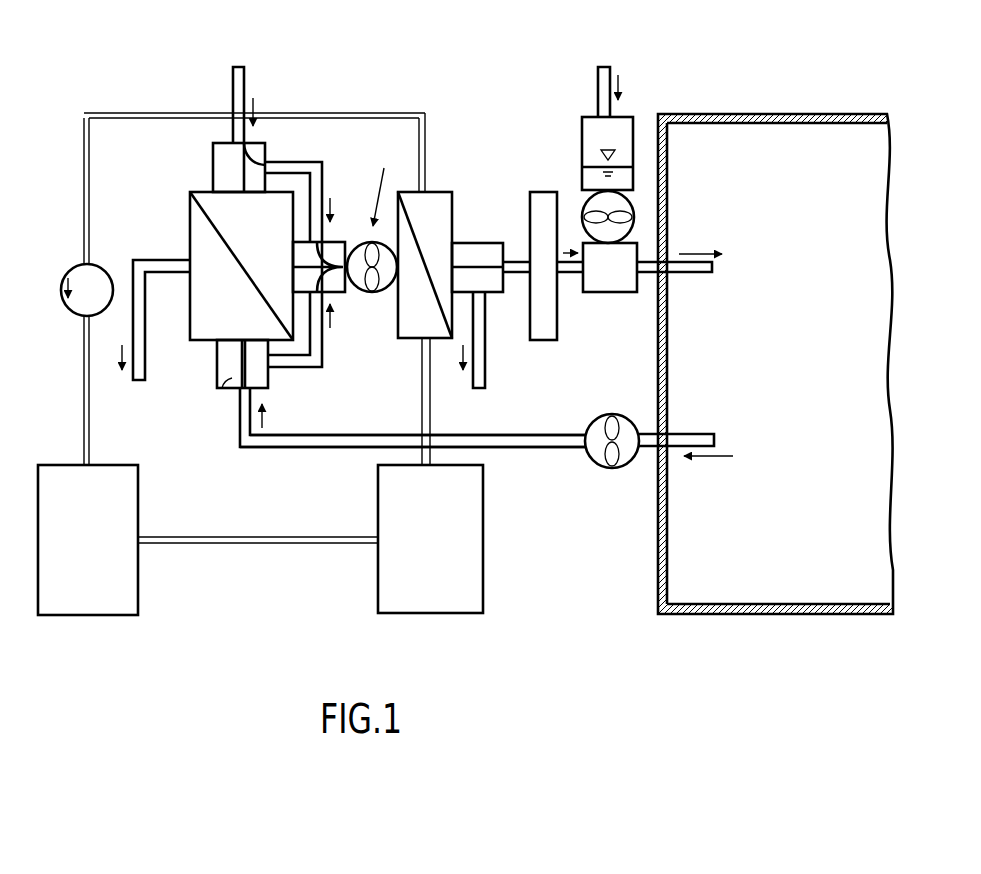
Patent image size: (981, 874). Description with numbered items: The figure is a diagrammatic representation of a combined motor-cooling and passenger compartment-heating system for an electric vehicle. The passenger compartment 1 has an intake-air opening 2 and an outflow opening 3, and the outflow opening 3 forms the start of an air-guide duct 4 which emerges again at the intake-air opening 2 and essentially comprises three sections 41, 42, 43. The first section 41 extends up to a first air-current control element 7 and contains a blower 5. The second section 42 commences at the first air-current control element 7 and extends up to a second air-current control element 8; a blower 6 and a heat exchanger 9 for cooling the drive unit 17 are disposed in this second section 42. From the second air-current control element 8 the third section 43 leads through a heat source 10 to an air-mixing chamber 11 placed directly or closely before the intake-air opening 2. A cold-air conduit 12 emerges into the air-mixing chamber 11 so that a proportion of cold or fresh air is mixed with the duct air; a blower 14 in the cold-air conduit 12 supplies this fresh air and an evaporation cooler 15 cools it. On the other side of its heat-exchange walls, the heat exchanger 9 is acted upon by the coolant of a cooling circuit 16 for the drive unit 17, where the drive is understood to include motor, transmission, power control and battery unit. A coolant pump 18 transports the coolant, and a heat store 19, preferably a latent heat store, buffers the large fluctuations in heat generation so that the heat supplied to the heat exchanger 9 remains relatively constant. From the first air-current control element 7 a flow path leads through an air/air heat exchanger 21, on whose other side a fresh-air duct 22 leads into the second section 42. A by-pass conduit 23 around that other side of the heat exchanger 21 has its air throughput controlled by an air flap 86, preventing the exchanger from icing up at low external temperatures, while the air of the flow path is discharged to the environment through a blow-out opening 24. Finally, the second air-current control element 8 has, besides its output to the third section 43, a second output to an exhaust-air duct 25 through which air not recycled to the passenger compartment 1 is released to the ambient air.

The passenger compartment 1 is at (825, 357).
The intake-air opening 2 is at (697, 273).
The outflow opening 3 is at (700, 434).
The air-guide duct 4 is at (286, 452).
The blower 5 is at (606, 468).
The blower 6 is at (380, 294).
The first air-current control element 7 is at (226, 390).
The second air-current control element 8 is at (478, 244).
The heat exchanger 9 is at (433, 207).
The heat source 10 is at (543, 196).
The air-mixing chamber 11 is at (625, 293).
The cold-air conduit 12 is at (598, 82).
The blower 14 is at (635, 213).
The evaporation cooler 15 is at (620, 128).
The cooling circuit 16 is at (80, 384).
The drive unit 17 is at (104, 555).
The coolant pump 18 is at (72, 272).
The heat store 19 is at (437, 555).
The air/air heat exchanger 21 is at (192, 232).
The fresh-air duct 22 is at (244, 83).
The by-pass conduit 23 is at (322, 187).
The blow-out opening 24 is at (147, 373).
The exhaust-air duct 25 is at (487, 383).
The first section 41 is at (527, 448).
The second section 42 is at (384, 181).
The third section 43 is at (516, 275).
The air flap 86 is at (225, 168).